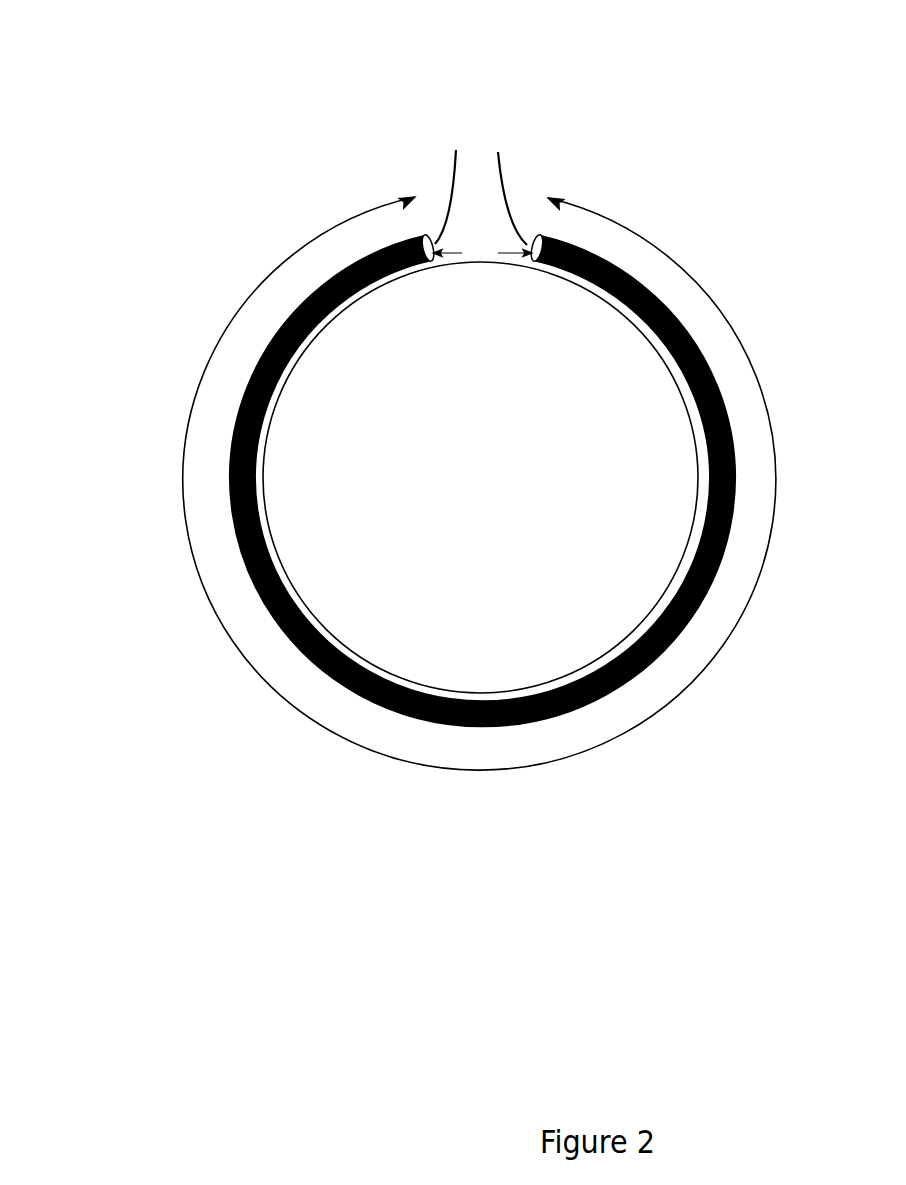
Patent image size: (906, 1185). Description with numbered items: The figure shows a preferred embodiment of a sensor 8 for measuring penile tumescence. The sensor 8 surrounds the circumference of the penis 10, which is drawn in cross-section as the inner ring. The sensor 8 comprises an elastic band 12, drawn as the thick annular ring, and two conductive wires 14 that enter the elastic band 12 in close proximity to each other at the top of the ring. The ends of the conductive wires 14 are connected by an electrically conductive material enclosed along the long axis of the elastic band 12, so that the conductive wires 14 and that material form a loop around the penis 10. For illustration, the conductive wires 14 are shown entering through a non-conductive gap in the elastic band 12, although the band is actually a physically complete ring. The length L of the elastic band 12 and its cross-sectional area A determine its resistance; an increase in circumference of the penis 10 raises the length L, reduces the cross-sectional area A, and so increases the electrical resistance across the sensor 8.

The sensor 8 is at (218, 378).
The penis 10 is at (295, 518).
The elastic band 12 is at (280, 629).
The conductive wires 14 is at (492, 153).
The cross-sectional area A is at (482, 247).
The length L is at (814, 486).